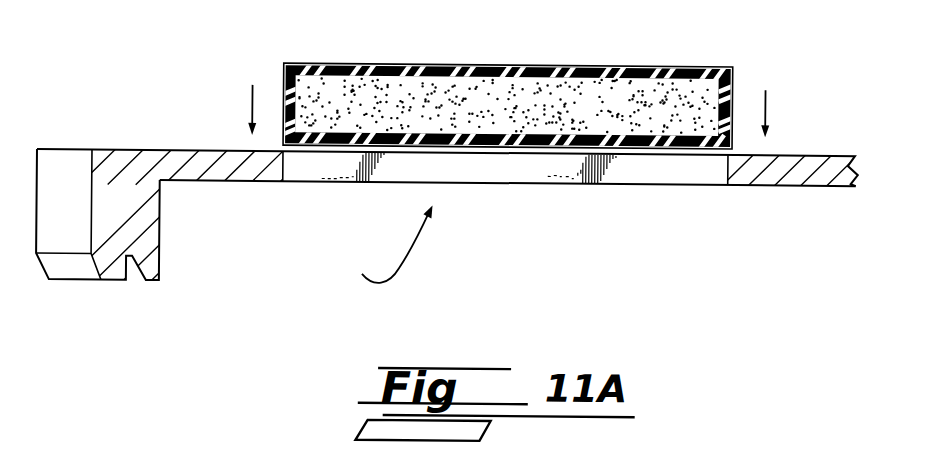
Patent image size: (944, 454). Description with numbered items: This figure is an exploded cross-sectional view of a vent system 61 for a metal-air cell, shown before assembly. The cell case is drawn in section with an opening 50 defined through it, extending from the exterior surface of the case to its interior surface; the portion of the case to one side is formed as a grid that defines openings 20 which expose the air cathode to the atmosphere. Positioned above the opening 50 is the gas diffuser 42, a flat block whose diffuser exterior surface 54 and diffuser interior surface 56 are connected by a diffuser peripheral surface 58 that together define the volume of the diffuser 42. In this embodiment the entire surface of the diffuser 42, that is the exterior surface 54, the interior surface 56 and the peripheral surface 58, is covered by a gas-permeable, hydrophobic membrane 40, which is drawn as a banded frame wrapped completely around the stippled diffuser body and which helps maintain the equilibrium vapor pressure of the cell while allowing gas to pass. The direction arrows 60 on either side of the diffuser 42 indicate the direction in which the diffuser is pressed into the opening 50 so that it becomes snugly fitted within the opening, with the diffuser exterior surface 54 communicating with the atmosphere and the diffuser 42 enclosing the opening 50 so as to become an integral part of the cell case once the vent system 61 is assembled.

The openings 20 is at (158, 148).
The gas-permeable, hydrophobic membrane 40 is at (510, 129).
The gas diffuser 42 is at (430, 97).
The opening 50 is at (655, 173).
The diffuser exterior surface 54 is at (417, 61).
The diffuser interior surface 56 is at (487, 133).
The diffuser peripheral surface 58 is at (283, 81).
The direction arrows 60 is at (507, 111).
The vent system 61 is at (379, 244).